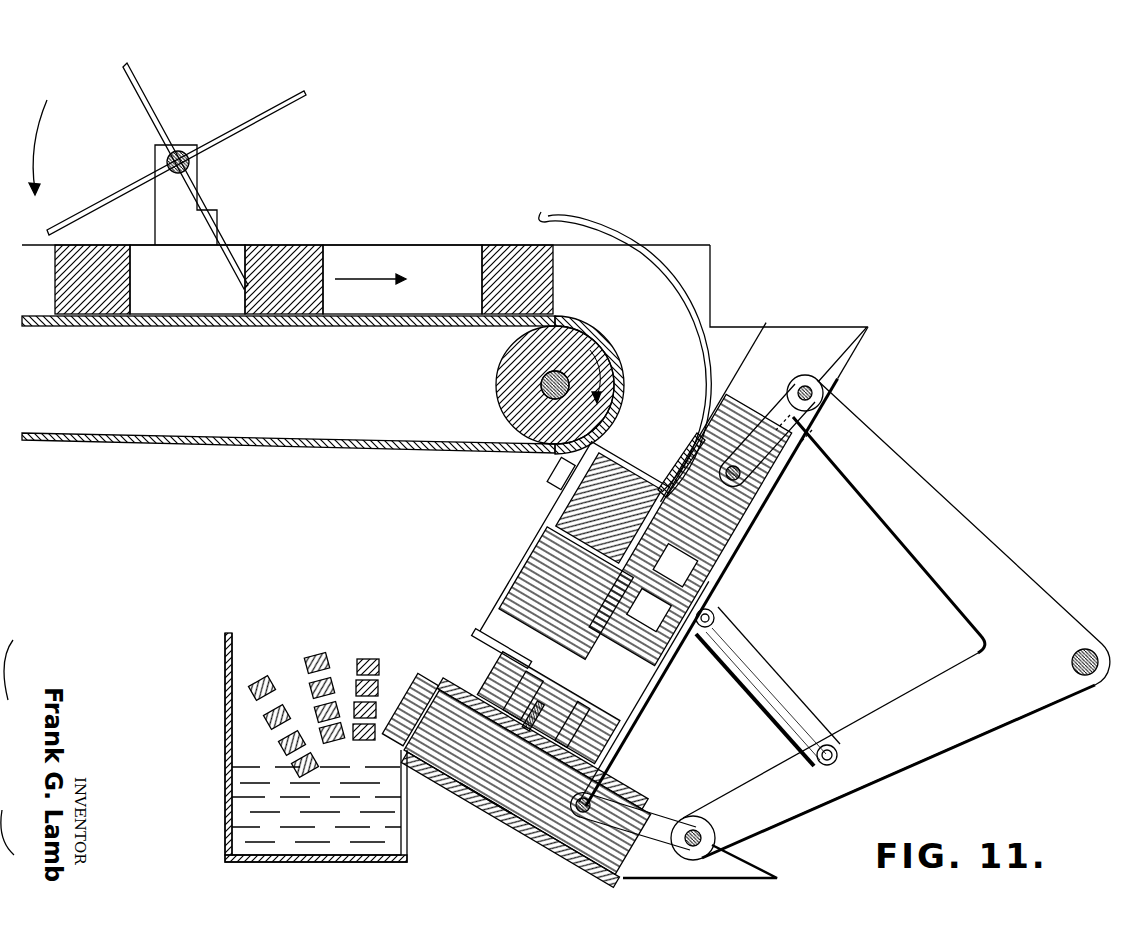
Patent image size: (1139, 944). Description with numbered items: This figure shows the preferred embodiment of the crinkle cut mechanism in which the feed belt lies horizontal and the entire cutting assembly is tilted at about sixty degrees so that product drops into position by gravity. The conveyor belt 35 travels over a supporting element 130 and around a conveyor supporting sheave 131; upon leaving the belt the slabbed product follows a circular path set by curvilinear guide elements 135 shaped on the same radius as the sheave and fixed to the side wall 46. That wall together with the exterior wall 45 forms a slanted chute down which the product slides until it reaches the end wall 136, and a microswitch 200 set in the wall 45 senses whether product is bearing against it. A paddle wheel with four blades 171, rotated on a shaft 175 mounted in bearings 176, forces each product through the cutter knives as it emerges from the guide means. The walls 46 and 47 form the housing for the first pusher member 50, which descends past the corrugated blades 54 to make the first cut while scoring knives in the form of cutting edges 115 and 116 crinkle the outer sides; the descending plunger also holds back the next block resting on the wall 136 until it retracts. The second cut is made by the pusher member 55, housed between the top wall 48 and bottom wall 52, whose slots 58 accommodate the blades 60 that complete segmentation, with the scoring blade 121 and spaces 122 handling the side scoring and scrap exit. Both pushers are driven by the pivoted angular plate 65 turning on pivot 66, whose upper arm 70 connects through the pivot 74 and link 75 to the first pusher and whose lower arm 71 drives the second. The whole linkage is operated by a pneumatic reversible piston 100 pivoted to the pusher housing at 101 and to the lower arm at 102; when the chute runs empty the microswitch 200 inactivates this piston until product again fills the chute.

The shaft 175 is at (179, 152).
The blades 171 is at (263, 119).
The bearings 176 is at (190, 174).
The supporting element 130 is at (197, 333).
The conveyor belt 35 is at (334, 318).
The conveyor supporting sheave 131 is at (513, 398).
The curvilinear guide elements 135 is at (692, 300).
The pivot 74 is at (814, 393).
The link 75 is at (761, 438).
The upper arm 70 is at (905, 475).
The lower arm 71 is at (956, 745).
The pivoted angular plate 65 is at (1018, 554).
The pivot 66 is at (1086, 652).
The side wall 46 is at (652, 510).
The microswitch 200 is at (549, 479).
The exterior wall 45 is at (540, 531).
The pusher member 50 is at (744, 532).
The bottom wall 52 is at (720, 566).
The wall 47 is at (706, 578).
The end wall 136 is at (513, 644).
The pivot 101 is at (715, 616).
The pneumatic reversible piston 100 is at (762, 672).
The pivot 102 is at (838, 755).
The cutting edge 115 is at (552, 687).
The spaces 122 is at (506, 722).
The cutting edge 116 is at (620, 717).
The corrugated blades 54 is at (561, 741).
The top wall 48 is at (633, 791).
The blades 60 is at (437, 718).
The slots 58 is at (420, 778).
The scoring blade 121 is at (462, 798).
The pusher member 55 is at (498, 806).